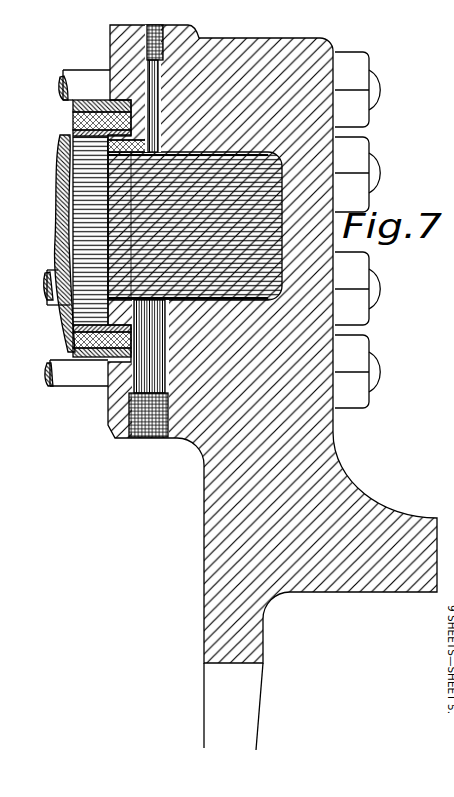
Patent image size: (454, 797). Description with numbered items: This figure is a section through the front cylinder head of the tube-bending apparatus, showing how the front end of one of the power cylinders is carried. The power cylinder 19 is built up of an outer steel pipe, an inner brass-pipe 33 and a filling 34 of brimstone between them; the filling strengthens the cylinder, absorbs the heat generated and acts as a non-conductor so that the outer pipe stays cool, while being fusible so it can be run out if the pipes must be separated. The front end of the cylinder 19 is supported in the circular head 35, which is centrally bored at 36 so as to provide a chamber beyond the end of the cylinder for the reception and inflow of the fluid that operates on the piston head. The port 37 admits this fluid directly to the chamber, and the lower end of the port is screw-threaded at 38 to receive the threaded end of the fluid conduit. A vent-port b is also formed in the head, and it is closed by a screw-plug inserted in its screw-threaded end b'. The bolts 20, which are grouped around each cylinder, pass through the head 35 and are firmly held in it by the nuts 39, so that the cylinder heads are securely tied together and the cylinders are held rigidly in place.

The vent-port b is at (106, 84).
The screw-threaded end b' is at (124, 81).
The power cylinder 19 is at (73, 108).
The bolts 20 is at (82, 80).
The inner brass-pipe 33 is at (64, 137).
The filling 34 is at (73, 124).
The circular head 35 is at (208, 403).
The central bore 36 is at (268, 259).
The port 37 is at (134, 420).
The screw-threaded lower end 38 is at (142, 437).
The nuts 39 is at (354, 65).